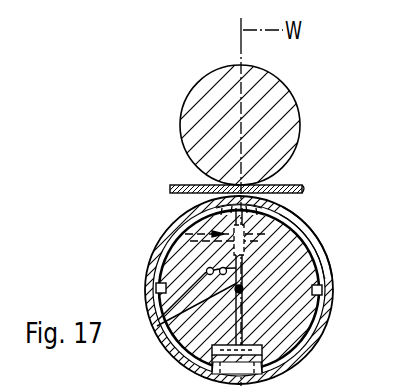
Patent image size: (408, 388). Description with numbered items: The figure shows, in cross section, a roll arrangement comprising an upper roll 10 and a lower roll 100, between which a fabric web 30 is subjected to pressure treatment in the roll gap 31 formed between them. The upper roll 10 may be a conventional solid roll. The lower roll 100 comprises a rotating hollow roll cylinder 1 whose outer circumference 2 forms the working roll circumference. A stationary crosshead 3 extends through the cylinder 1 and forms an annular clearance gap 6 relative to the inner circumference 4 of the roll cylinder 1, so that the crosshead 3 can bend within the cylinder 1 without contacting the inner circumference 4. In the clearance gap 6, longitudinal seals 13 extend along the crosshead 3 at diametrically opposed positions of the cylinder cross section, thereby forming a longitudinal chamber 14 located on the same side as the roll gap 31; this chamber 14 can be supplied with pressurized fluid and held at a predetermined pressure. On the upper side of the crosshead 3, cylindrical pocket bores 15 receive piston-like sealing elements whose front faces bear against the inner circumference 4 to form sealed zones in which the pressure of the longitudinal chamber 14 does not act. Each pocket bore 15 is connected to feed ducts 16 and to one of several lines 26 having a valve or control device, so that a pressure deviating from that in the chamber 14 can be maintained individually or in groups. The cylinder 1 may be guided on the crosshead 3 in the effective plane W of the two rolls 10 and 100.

The upper roll 10 is at (183, 97).
The roll gap 31 is at (203, 182).
The fabric web 30 is at (297, 186).
The lower roll 100 is at (293, 201).
The longitudinal chamber 14 is at (301, 221).
The inner circumference 4 is at (303, 246).
The crosshead 3 is at (301, 272).
The outer circumference 2 is at (160, 253).
The roll cylinder 1 is at (168, 268).
The longitudinal seals 13 is at (157, 289).
The pocket bores 15 is at (178, 219).
The feed ducts 16 is at (182, 238).
The lines 26 is at (160, 320).
The clearance gap 6 is at (176, 346).